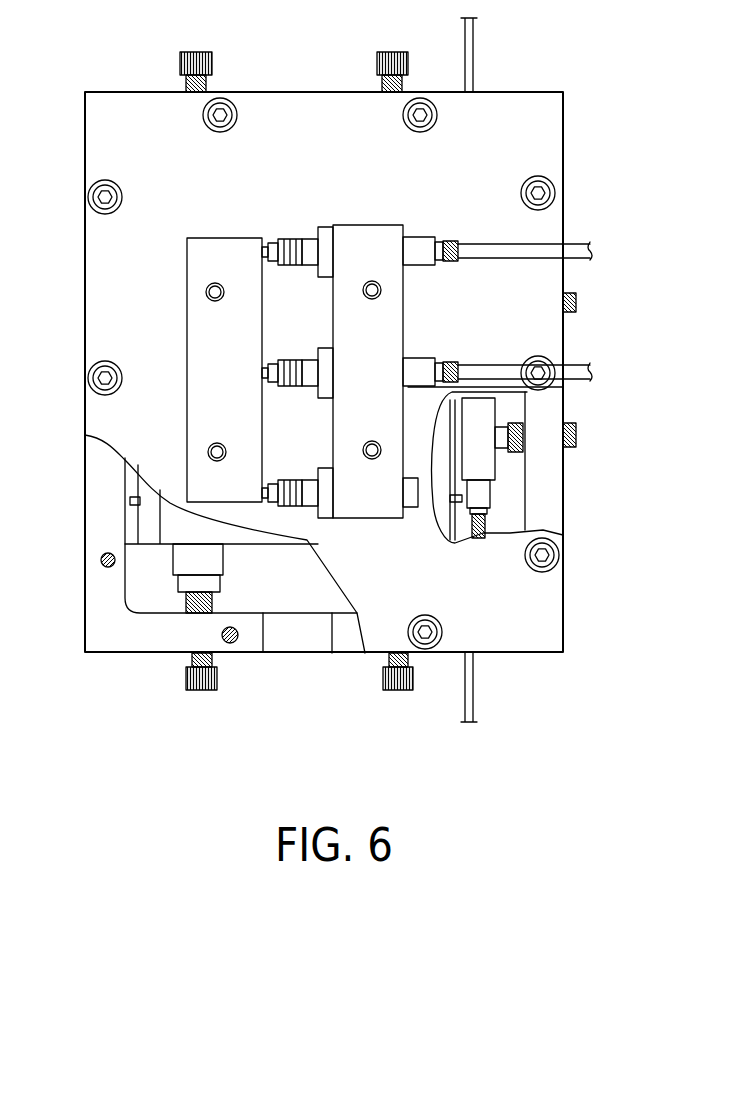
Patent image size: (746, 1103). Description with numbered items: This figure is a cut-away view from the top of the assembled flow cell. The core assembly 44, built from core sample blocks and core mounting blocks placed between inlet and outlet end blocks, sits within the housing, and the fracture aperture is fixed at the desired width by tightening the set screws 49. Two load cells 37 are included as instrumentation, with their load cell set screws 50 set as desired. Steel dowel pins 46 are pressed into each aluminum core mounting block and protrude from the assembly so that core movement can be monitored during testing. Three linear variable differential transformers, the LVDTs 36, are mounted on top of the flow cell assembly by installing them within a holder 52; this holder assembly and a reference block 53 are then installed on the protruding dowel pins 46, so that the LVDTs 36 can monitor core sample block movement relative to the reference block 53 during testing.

The LVDTs 36 is at (422, 258).
The load cells 37 is at (500, 471).
The core assembly 44 is at (177, 525).
The pins 46 is at (369, 279).
The set screws 49 is at (195, 50).
The load cell set screws 50 is at (580, 300).
The holder 52 is at (398, 221).
The reference block 53 is at (183, 326).